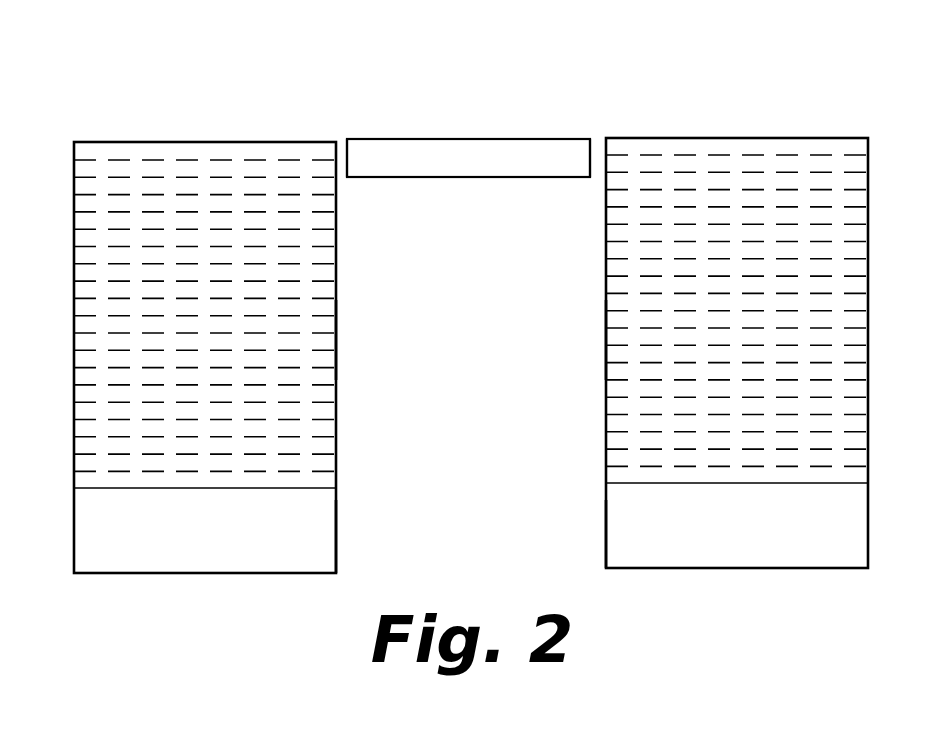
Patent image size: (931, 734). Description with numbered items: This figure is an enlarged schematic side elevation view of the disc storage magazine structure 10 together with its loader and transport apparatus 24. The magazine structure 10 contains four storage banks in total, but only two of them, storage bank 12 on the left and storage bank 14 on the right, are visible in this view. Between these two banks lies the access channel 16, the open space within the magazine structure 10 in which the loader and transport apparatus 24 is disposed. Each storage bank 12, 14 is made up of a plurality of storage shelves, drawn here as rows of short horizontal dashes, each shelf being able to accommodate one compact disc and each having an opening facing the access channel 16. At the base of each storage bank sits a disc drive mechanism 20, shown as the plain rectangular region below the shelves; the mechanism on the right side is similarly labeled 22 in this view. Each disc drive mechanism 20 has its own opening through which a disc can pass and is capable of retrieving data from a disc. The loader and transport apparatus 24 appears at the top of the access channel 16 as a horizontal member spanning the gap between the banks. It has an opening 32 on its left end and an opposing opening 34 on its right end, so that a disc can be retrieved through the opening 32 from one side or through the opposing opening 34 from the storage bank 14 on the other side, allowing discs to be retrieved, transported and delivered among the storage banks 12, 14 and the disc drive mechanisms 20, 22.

The disc storage magazine structure 10 is at (297, 83).
The storage bank 12 is at (229, 336).
The storage bank 14 is at (713, 333).
The access channel 16 is at (466, 378).
The disc drive mechanism 20 is at (197, 541).
The second base portion 22 is at (731, 538).
The loader and transport apparatus 24 is at (484, 138).
The opening 32 is at (349, 156).
The opposing opening 34 is at (590, 152).